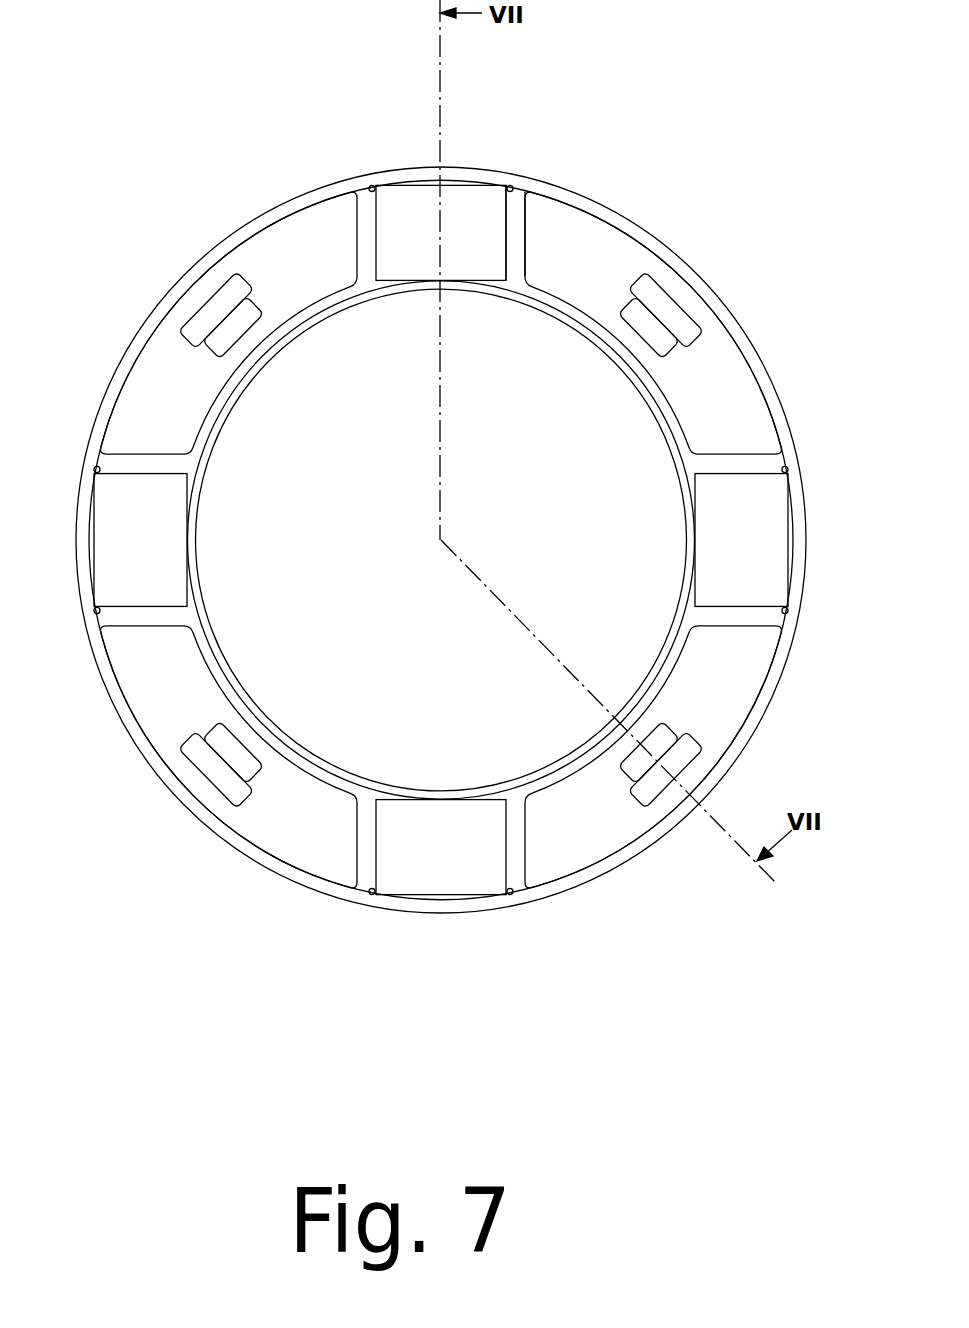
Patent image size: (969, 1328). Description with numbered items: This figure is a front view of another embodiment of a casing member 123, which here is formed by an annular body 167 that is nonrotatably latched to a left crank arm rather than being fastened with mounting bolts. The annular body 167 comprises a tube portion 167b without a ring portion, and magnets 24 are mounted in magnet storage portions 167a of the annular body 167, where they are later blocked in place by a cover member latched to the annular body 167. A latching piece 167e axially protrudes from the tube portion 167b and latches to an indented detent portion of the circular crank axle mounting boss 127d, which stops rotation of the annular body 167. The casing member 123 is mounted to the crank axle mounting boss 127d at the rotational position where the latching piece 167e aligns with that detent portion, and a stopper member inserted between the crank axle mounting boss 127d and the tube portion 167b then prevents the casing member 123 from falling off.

The magnets 24 is at (458, 204).
The casing member 123 is at (592, 164).
The crank axle mounting boss 127d is at (573, 308).
The annular body 167 is at (623, 203).
The magnet storage portions 167a is at (500, 222).
The tube portion 167b is at (680, 438).
The latching piece 167e is at (637, 363).